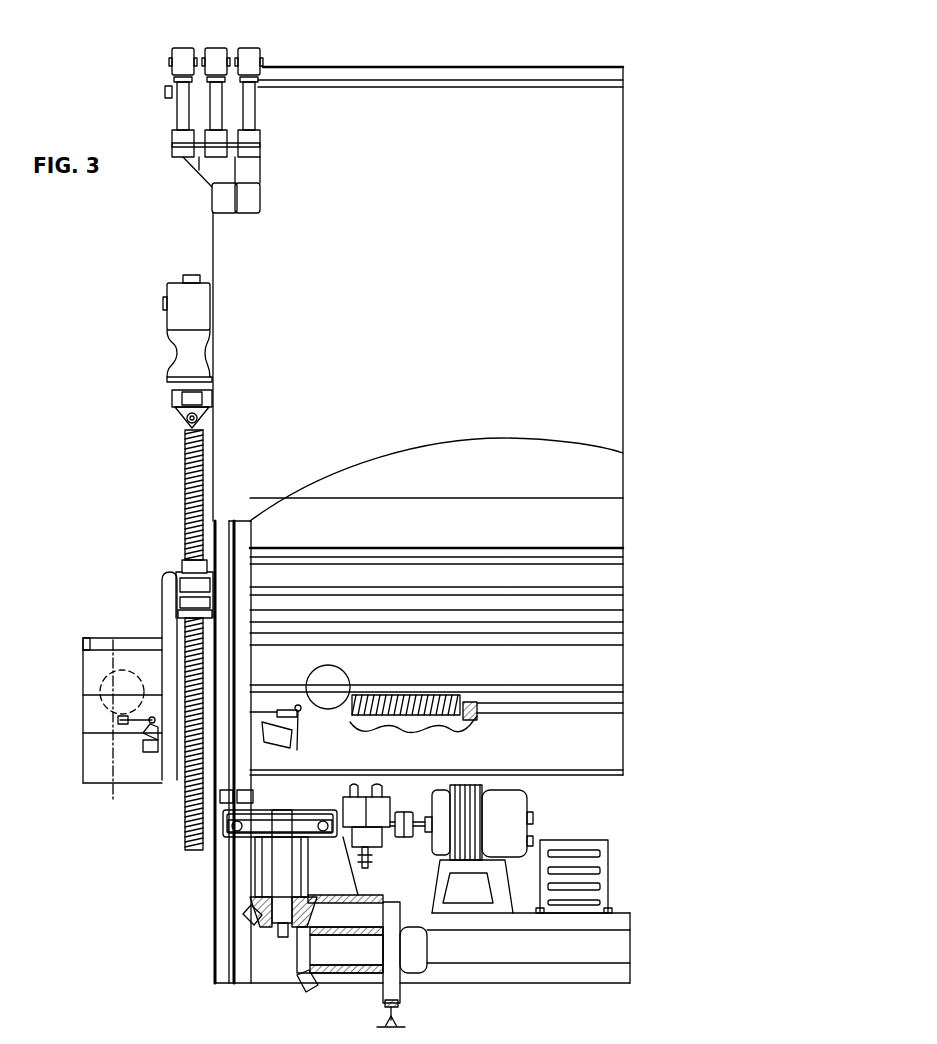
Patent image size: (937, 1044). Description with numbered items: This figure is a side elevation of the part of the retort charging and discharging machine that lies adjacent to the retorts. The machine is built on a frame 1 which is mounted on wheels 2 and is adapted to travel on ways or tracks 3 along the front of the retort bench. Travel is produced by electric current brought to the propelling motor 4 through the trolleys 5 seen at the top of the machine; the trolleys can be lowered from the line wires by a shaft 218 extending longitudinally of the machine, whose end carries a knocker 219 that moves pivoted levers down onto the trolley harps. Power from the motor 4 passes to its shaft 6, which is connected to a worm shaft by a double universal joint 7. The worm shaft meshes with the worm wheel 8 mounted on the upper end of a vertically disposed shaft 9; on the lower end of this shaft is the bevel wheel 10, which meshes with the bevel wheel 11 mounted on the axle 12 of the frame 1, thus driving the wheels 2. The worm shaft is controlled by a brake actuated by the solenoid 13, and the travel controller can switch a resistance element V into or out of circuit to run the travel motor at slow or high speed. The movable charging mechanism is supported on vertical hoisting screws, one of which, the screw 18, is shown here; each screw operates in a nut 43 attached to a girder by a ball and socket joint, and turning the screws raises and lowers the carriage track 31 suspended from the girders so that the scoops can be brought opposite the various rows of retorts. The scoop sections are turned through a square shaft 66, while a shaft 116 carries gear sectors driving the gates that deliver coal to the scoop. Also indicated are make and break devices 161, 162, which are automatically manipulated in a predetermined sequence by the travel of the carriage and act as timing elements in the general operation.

The frame 1 is at (222, 245).
The wheels 2 is at (382, 992).
The ways or tracks 3 is at (395, 1013).
The propelling motor 4 is at (529, 805).
The trolleys 5 is at (200, 46).
The motor shaft 6 is at (426, 819).
The double universal joint 7 is at (408, 813).
The worm wheel 8 is at (110, 637).
The vertically disposed shaft 9 is at (281, 873).
The bevel wheel 10 is at (265, 930).
The bevel wheel 11 is at (302, 988).
The axle 12 is at (463, 939).
The solenoid 13 is at (386, 843).
The hoisting screw 18 is at (185, 481).
The carriage track 31 is at (436, 761).
The nut 43 is at (180, 572).
The square shaft 66 is at (148, 638).
The shaft 116 is at (416, 586).
The make and break device 161 is at (293, 740).
The make and break device 162 is at (158, 752).
The shaft 218 is at (358, 91).
The knocker 219 is at (166, 92).
The resistance element V is at (610, 873).